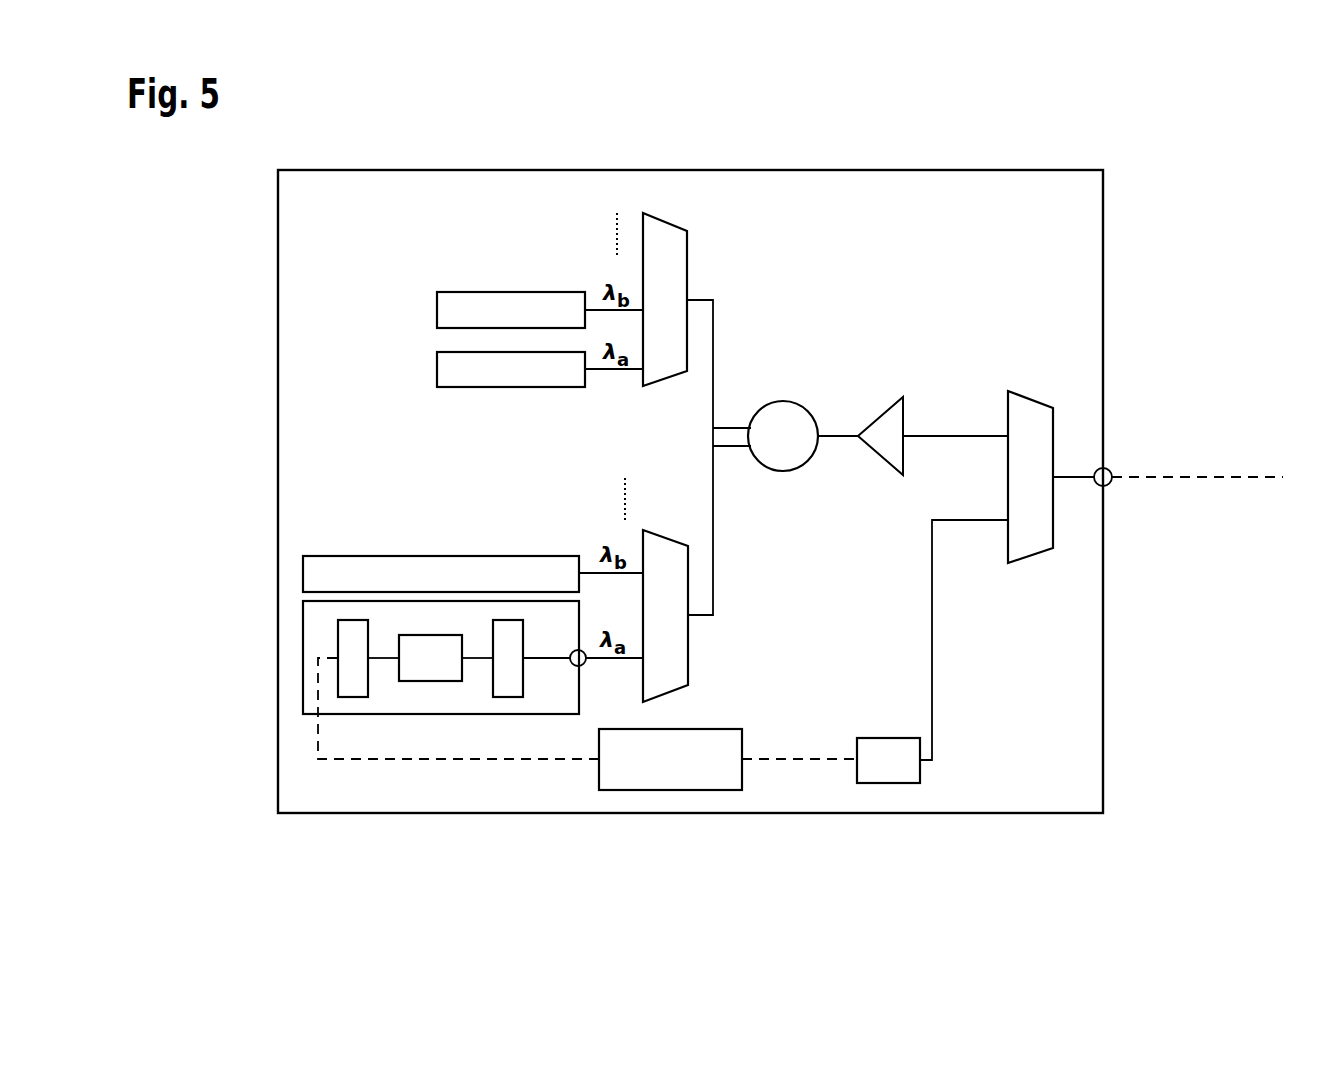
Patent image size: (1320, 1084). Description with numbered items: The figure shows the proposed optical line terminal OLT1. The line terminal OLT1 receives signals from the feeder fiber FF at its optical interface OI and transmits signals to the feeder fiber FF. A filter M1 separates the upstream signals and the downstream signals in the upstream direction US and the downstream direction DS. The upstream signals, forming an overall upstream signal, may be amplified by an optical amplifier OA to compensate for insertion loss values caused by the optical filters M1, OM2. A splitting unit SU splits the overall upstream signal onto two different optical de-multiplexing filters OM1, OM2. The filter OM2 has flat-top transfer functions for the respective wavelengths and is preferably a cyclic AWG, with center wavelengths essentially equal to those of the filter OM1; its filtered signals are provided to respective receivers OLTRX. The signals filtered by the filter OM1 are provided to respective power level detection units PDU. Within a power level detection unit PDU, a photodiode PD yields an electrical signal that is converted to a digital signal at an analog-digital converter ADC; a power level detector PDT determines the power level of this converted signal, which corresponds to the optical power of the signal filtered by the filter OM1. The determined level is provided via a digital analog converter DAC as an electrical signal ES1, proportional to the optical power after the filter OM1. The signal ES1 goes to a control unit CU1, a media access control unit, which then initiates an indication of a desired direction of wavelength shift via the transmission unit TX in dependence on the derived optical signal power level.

The optical line terminal OLT1 is at (1103, 210).
The de-multiplexing filter OM2 is at (688, 250).
The splitting unit SU is at (784, 401).
The optical amplifier OA is at (878, 410).
The filter M1 is at (1027, 398).
The upstream direction US is at (985, 422).
The downstream direction DS is at (975, 508).
The optical interface OI is at (1106, 469).
The feeder fiber FF is at (1236, 477).
The power level detection unit PDU is at (303, 571).
The photodiode PD is at (584, 664).
The de-multiplexing filter OM1 is at (689, 655).
The electrical signal ES1 is at (475, 760).
The control unit CU1 is at (708, 791).
The transmission unit TX is at (888, 760).
The receiver OLTRX is at (511, 339).
The digital analog converter DAC is at (353, 658).
The power level detector PDT is at (430, 658).
The analog-digital converter ADC is at (508, 658).